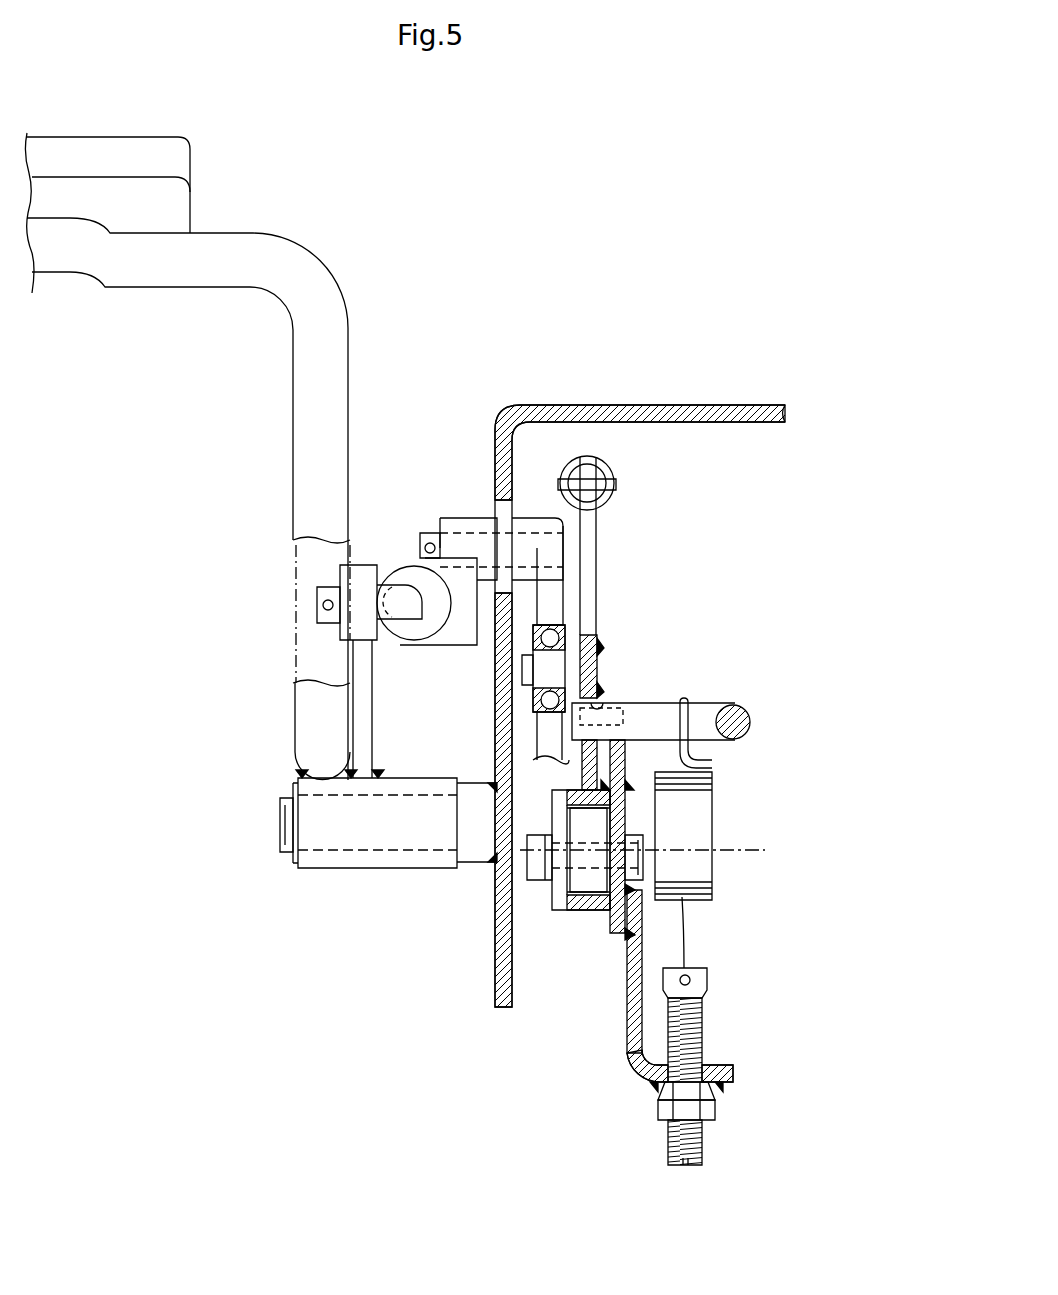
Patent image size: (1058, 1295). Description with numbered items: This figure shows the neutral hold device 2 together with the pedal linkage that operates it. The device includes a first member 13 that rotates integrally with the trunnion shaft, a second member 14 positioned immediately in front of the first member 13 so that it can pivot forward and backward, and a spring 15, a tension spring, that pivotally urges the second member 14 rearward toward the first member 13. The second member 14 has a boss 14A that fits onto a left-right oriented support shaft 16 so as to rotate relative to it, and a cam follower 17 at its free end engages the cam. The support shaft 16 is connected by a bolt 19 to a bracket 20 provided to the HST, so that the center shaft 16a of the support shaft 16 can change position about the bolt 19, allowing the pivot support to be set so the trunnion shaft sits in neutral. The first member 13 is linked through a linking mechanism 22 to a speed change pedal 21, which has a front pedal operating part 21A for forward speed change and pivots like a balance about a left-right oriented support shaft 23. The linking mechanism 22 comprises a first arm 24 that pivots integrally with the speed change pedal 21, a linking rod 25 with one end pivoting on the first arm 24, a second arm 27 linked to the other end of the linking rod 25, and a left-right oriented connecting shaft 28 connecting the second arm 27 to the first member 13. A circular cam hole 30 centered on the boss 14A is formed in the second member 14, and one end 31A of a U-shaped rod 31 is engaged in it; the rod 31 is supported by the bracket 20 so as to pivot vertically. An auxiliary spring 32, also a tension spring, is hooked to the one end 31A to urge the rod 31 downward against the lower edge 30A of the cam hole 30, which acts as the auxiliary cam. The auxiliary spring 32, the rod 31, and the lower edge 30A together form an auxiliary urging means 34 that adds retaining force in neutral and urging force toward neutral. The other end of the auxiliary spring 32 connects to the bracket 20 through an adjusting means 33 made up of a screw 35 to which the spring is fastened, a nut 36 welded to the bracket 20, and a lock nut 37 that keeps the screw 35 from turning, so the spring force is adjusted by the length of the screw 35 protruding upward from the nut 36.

The neutral hold device 2 is at (650, 552).
The first member 13 is at (555, 578).
The second member 14 is at (590, 535).
The boss 14A is at (578, 910).
The spring 15 is at (605, 470).
The support shaft 16 is at (590, 885).
The center shaft 16a is at (696, 852).
The cam follower 17 is at (535, 710).
The bolt 19 is at (533, 880).
The bracket 20 is at (623, 803).
The speed change pedal 21 is at (318, 254).
The front pedal operating part 21A is at (106, 137).
The linking mechanism 22 is at (386, 500).
The support shaft 23 is at (280, 826).
The first arm 24 is at (368, 703).
The linking rod 25 is at (390, 620).
The second arm 27 is at (445, 645).
The connecting shaft 28 is at (430, 530).
The cam hole 30 is at (600, 705).
The lower edge 30A is at (580, 737).
The rod 31 is at (737, 704).
The one end 31A is at (635, 708).
The auxiliary spring 32 is at (712, 895).
The adjusting means 33 is at (685, 1144).
The auxiliary urging means 34 is at (717, 693).
The screw 35 is at (702, 1015).
The nut 36 is at (715, 1095).
The lock nut 37 is at (658, 1110).